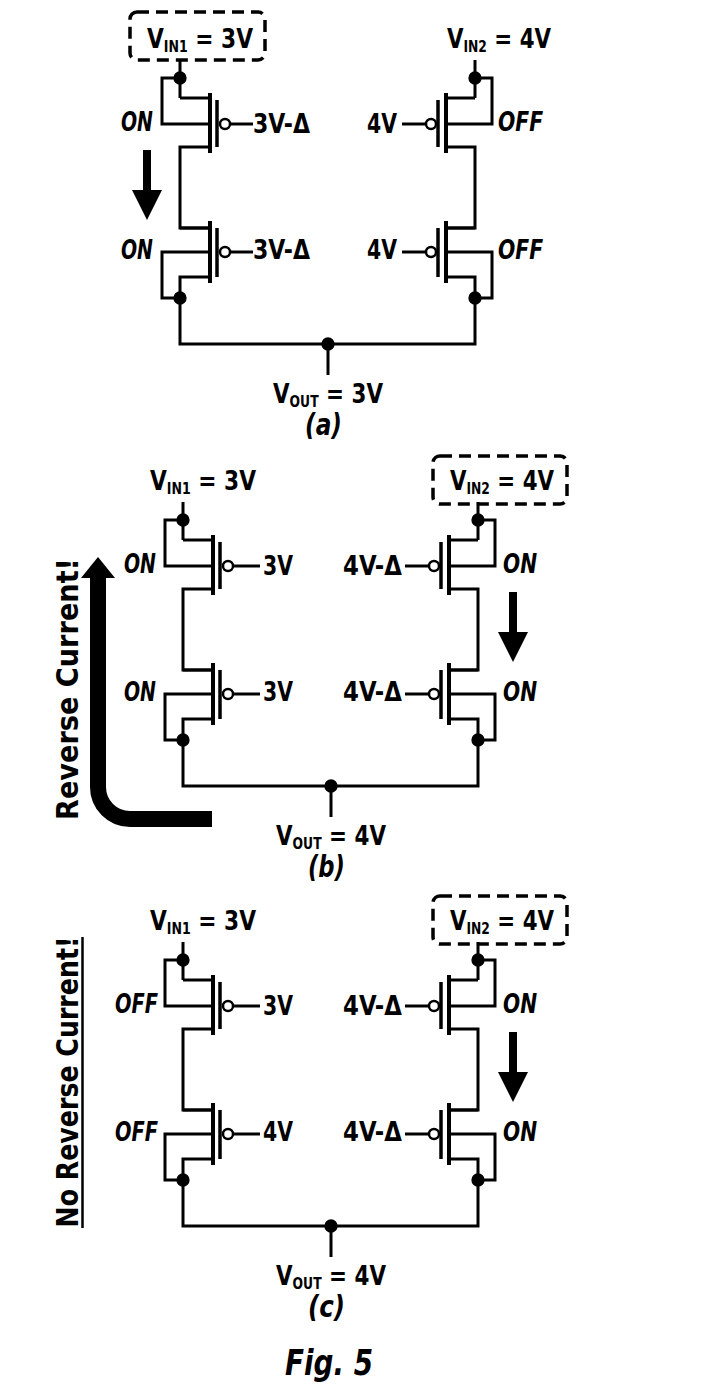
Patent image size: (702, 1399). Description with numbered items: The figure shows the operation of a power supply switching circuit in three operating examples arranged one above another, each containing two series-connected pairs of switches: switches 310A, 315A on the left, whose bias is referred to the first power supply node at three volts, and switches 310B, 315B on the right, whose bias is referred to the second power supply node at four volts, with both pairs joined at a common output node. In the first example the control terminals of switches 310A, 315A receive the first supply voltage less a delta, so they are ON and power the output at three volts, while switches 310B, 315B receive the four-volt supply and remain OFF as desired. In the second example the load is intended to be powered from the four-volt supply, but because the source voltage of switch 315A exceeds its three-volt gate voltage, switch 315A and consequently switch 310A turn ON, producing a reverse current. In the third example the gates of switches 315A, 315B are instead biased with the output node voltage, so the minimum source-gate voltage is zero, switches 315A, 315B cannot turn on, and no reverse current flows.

The switch 310A is at (193, 148).
The switch 310B is at (460, 148).
The switch 315A is at (193, 276).
The switch 315B is at (460, 276).